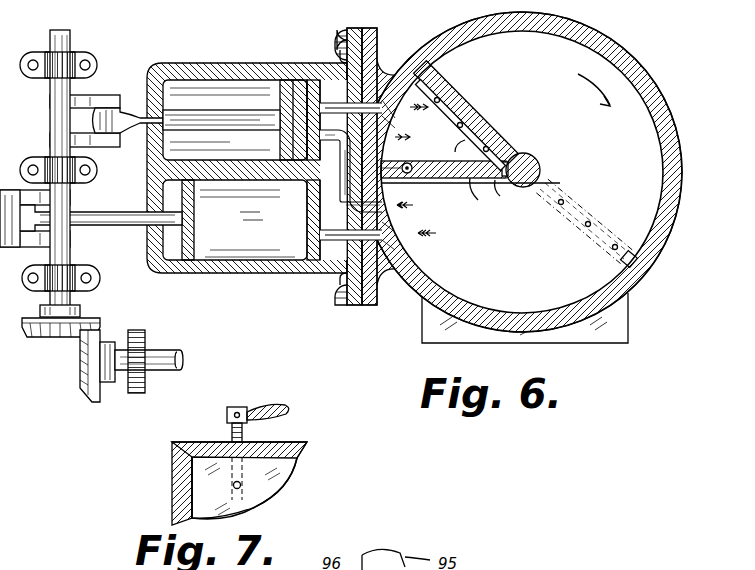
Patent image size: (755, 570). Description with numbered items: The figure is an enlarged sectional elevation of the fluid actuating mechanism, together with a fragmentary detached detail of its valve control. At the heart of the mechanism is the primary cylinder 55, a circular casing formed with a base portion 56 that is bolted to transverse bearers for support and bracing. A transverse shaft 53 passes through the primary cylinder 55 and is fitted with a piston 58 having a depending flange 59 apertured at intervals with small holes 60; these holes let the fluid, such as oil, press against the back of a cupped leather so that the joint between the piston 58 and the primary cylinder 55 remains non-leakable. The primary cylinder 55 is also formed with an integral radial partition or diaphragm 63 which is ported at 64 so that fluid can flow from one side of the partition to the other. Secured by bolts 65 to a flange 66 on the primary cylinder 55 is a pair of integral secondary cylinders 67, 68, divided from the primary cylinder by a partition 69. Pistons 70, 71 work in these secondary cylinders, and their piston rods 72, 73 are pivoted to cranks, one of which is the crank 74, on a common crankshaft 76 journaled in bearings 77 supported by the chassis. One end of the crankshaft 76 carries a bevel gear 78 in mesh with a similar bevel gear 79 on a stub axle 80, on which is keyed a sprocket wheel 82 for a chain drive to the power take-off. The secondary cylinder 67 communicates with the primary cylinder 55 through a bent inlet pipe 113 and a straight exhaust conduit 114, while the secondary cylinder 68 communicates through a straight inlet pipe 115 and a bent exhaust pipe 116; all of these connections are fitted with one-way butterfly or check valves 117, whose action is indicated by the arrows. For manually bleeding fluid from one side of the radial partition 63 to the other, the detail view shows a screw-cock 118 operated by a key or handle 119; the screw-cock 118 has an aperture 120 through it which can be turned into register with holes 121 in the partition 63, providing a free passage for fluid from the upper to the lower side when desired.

In FIG. 6, the transverse shaft 53 is at (538, 158).
In FIG. 6, the primary cylinder 55 is at (683, 182).
In FIG. 7, the primary cylinder 55 is at (300, 452).
In FIG. 6, the base portion 56 is at (630, 338).
In FIG. 6, the piston 58 is at (460, 103).
In FIG. 6, the depending flange 59 is at (490, 135).
In FIG. 6, the small holes 60 is at (462, 149).
In FIG. 6, the radial partition 63 is at (478, 184).
In FIG. 7, the radial partition 63 is at (278, 490).
In FIG. 6, the port 64 is at (505, 190).
In FIG. 6, the bolts 65 is at (340, 35).
In FIG. 6, the flange 66 is at (380, 298).
In FIG. 6, the secondary cylinder 67 is at (213, 80).
In FIG. 6, the secondary cylinder 68 is at (240, 255).
In FIG. 6, the partition 69 is at (308, 262).
In FIG. 6, the piston 70 is at (285, 75).
In FIG. 6, the piston 71 is at (192, 262).
In FIG. 6, the piston rod 72 is at (165, 63).
In FIG. 6, the piston rod 73 is at (135, 226).
In FIG. 6, the crank 74 is at (110, 96).
In FIG. 6, the crankshaft 76 is at (62, 34).
In FIG. 6, the bearings 77 is at (22, 74).
In FIG. 6, the bevel gear 78 is at (22, 337).
In FIG. 6, the bevel gear 79 is at (90, 385).
In FIG. 6, the stub axle 80 is at (182, 354).
In FIG. 6, the sprocket wheel 82 is at (140, 394).
In FIG. 6, the bent inlet pipe 113 is at (300, 180).
In FIG. 6, the straight exhaust conduit 114 is at (335, 86).
In FIG. 6, the straight inlet pipe 115 is at (336, 262).
In FIG. 6, the bent exhaust pipe 116 is at (360, 172).
In FIG. 6, the check valves 117 is at (396, 122).
In FIG. 6, the screw-cock 118 is at (410, 160).
In FIG. 7, the screw-cock 118 is at (225, 428).
In FIG. 7, the handle 119 is at (265, 405).
In FIG. 7, the aperture 120 is at (240, 488).
In FIG. 6, the holes 121 is at (405, 162).
In FIG. 7, the holes 121 is at (233, 486).